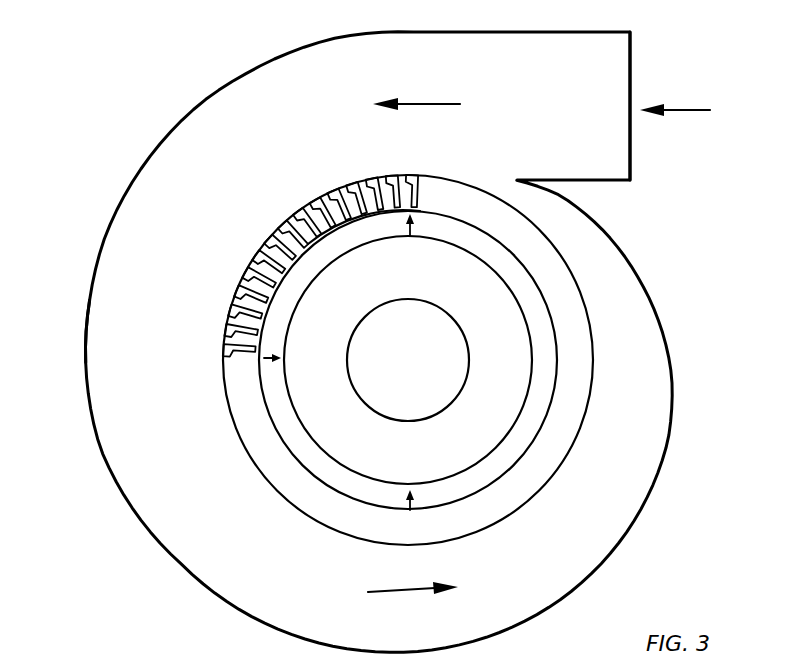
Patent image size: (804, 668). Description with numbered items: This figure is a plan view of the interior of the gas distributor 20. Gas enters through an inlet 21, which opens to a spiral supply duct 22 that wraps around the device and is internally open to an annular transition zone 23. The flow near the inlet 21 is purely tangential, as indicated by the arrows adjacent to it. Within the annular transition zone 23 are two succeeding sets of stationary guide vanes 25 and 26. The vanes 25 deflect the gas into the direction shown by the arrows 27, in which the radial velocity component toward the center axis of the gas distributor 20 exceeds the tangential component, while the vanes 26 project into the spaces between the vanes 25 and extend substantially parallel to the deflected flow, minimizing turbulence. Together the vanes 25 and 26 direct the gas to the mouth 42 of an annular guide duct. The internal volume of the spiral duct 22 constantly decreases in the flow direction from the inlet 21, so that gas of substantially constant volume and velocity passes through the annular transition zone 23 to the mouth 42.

The gas distributor 20 is at (700, 336).
The inlet 21 is at (632, 68).
The spiral supply duct 22 is at (100, 447).
The annular transition zone 23 is at (277, 437).
The stationary guide vanes 25 is at (343, 188).
The stationary guide vanes 26 is at (330, 230).
The arrows 27 is at (410, 230).
The mouth 42 is at (285, 297).